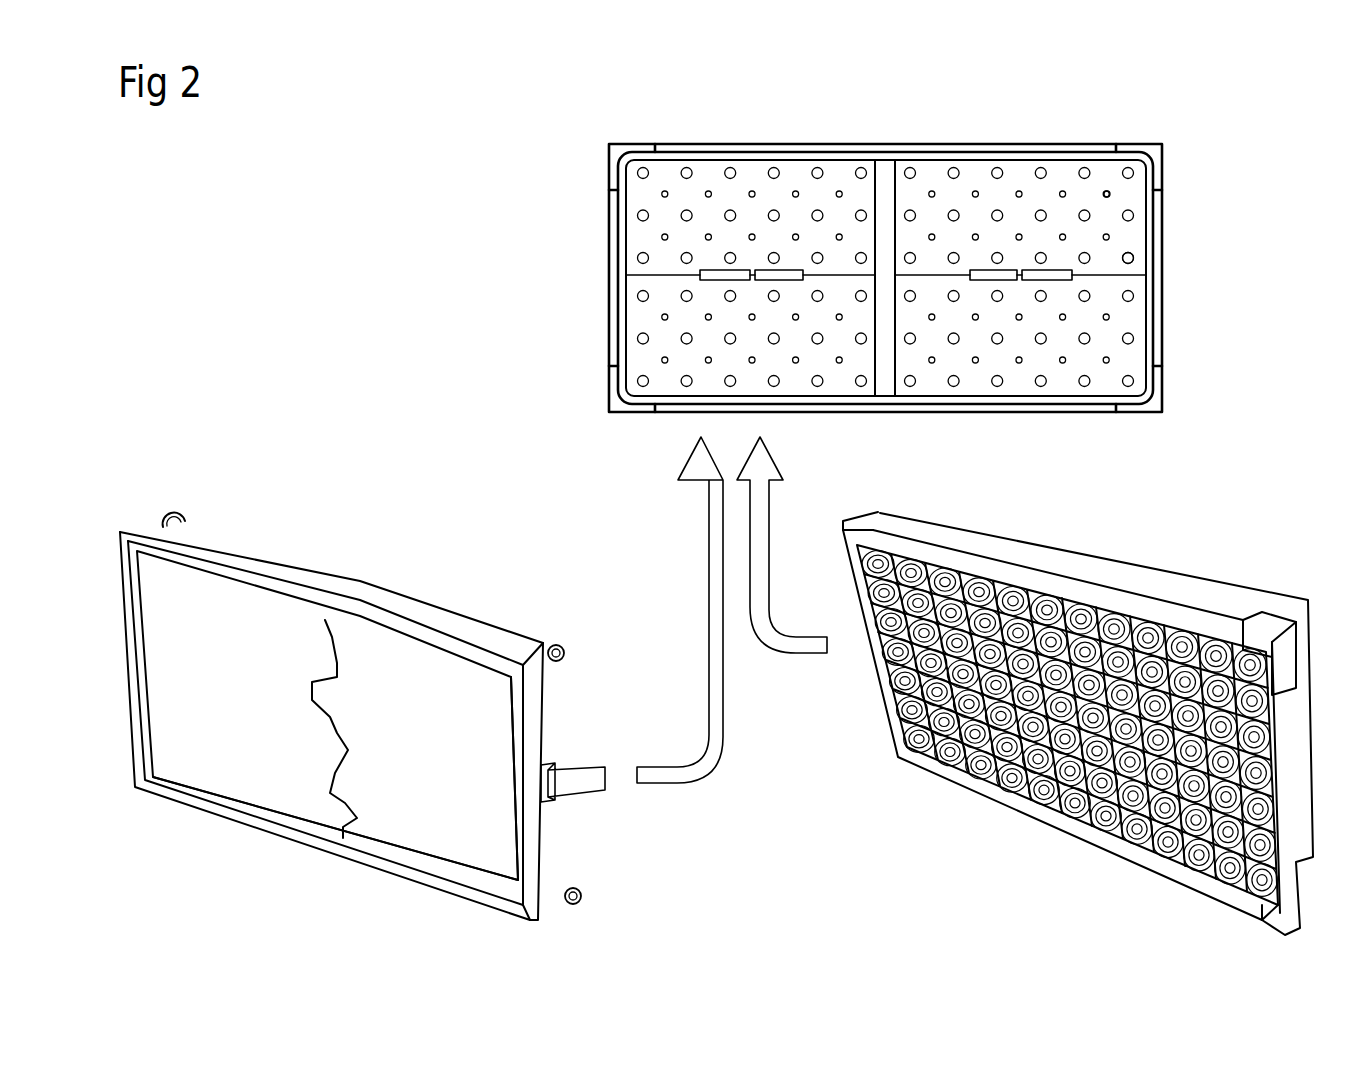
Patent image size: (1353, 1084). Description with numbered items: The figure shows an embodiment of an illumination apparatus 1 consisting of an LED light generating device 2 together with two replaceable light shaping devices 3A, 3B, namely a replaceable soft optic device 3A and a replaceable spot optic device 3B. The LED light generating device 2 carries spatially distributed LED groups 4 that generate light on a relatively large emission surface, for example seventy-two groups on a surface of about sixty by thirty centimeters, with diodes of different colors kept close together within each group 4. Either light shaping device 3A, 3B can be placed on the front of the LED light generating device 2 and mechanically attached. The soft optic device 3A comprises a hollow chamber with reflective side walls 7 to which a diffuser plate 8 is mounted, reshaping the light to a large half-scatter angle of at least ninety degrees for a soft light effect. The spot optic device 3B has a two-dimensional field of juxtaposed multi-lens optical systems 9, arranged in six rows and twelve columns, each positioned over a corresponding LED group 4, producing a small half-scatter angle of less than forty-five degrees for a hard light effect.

The illumination apparatus 1 is at (584, 149).
The LED light generating device 2 is at (1112, 195).
The LED group 4 is at (1134, 258).
The soft optic device 3A is at (200, 853).
The spot optic device 3B is at (965, 835).
The reflective side wall 7 is at (387, 847).
The diffuser plate 8 is at (227, 605).
The multi-lens optical system 9 is at (993, 662).